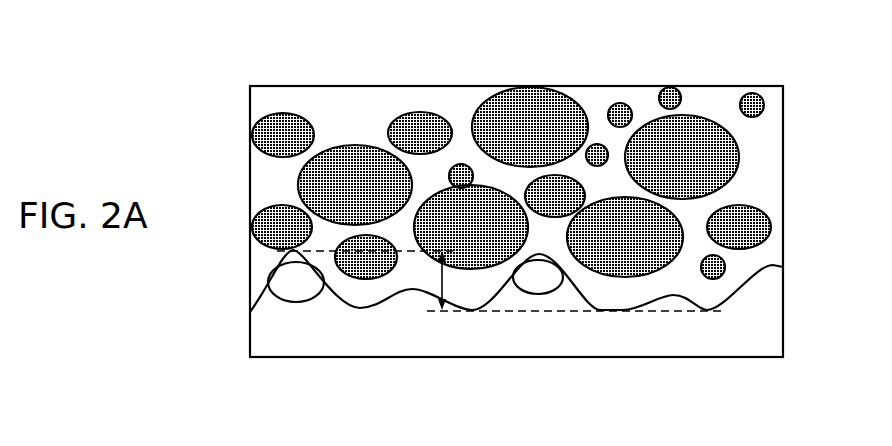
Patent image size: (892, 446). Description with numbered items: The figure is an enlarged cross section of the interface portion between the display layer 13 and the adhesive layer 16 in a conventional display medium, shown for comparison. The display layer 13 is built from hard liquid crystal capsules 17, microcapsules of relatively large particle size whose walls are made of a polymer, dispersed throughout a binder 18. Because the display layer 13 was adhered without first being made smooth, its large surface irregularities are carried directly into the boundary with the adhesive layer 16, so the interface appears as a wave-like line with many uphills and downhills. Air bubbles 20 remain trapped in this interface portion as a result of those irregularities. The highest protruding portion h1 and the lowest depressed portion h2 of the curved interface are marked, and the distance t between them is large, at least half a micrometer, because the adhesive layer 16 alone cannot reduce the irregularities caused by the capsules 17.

The display layer 13 is at (790, 88).
The adhesive layer 16 is at (790, 267).
The liquid crystal capsules 17 is at (531, 97).
The binder 18 is at (720, 93).
The air bubbles 20 is at (540, 283).
The highest protruding portion h1 is at (291, 243).
The lowest depressed portion h2 is at (705, 320).
The distance t is at (448, 280).